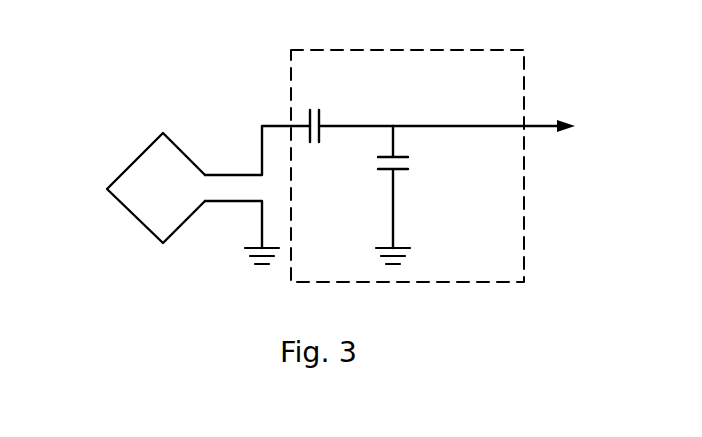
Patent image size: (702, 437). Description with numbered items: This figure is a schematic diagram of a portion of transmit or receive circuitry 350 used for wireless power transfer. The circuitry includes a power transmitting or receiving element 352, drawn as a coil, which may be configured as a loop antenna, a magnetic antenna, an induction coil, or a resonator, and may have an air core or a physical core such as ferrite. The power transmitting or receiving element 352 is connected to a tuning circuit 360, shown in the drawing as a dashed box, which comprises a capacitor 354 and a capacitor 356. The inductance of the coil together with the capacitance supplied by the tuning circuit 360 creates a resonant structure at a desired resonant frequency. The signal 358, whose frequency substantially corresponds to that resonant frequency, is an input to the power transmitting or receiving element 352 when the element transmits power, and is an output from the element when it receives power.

The transmit or receive circuitry 350 is at (182, 38).
The power transmitting or receiving element 352 is at (135, 163).
The capacitor 354 is at (321, 115).
The capacitor 356 is at (398, 170).
The signal 358 is at (427, 125).
The tuning circuit 360 is at (505, 50).